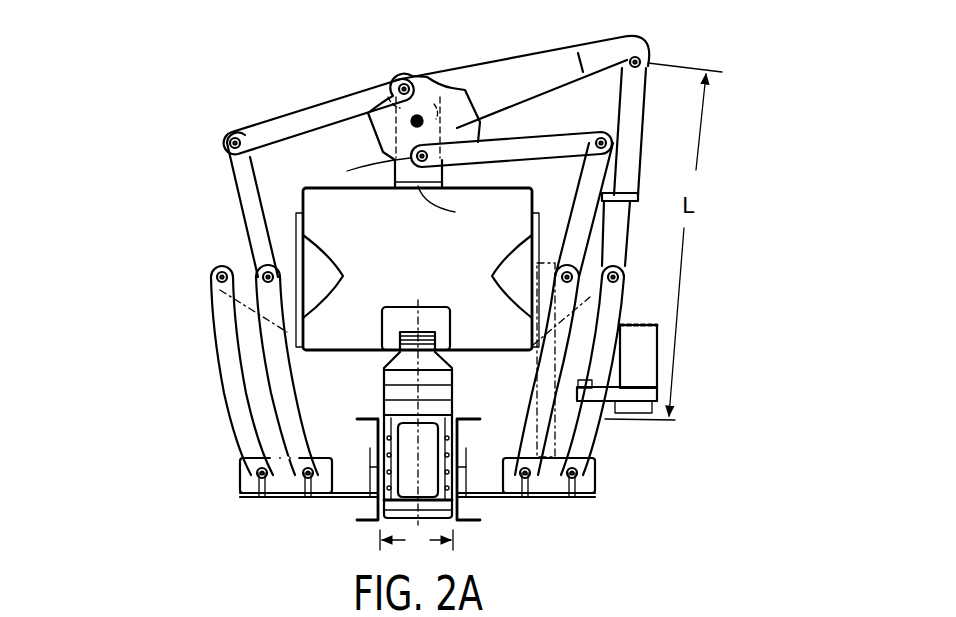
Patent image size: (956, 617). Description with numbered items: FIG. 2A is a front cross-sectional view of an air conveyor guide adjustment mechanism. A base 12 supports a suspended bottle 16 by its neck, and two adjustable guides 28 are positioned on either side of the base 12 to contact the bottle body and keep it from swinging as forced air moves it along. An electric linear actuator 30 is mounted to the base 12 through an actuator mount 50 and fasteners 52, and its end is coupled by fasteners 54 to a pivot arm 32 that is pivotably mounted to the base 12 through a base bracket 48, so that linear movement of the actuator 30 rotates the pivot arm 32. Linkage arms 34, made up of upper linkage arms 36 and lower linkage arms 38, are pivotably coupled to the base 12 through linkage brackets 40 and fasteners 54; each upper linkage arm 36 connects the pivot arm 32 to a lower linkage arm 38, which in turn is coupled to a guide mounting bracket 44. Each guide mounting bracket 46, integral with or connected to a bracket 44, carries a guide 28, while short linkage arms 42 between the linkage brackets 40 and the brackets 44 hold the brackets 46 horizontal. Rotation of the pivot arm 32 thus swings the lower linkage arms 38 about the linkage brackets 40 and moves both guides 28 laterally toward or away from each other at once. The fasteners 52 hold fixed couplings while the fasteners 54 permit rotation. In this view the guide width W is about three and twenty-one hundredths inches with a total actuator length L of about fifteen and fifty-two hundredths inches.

The base 12 is at (431, 258).
The bottle 16 is at (445, 522).
The adjustable guide 28 is at (306, 478).
The electric linear actuator 30 is at (645, 178).
The pivot arm 32 is at (515, 82).
The linkage arm 34 is at (220, 122).
The upper linkage arm 36 is at (315, 107).
The lower linkage arm 38 is at (242, 210).
The linkage bracket 40 is at (242, 288).
The short linkage arm 42 is at (243, 432).
The guide mounting bracket 44 is at (240, 477).
The guide mounting bracket 46 is at (252, 499).
The base bracket 48 is at (440, 113).
The actuator mount 50 is at (622, 335).
The fastener 52 is at (417, 266).
The fastener 54 is at (238, 140).